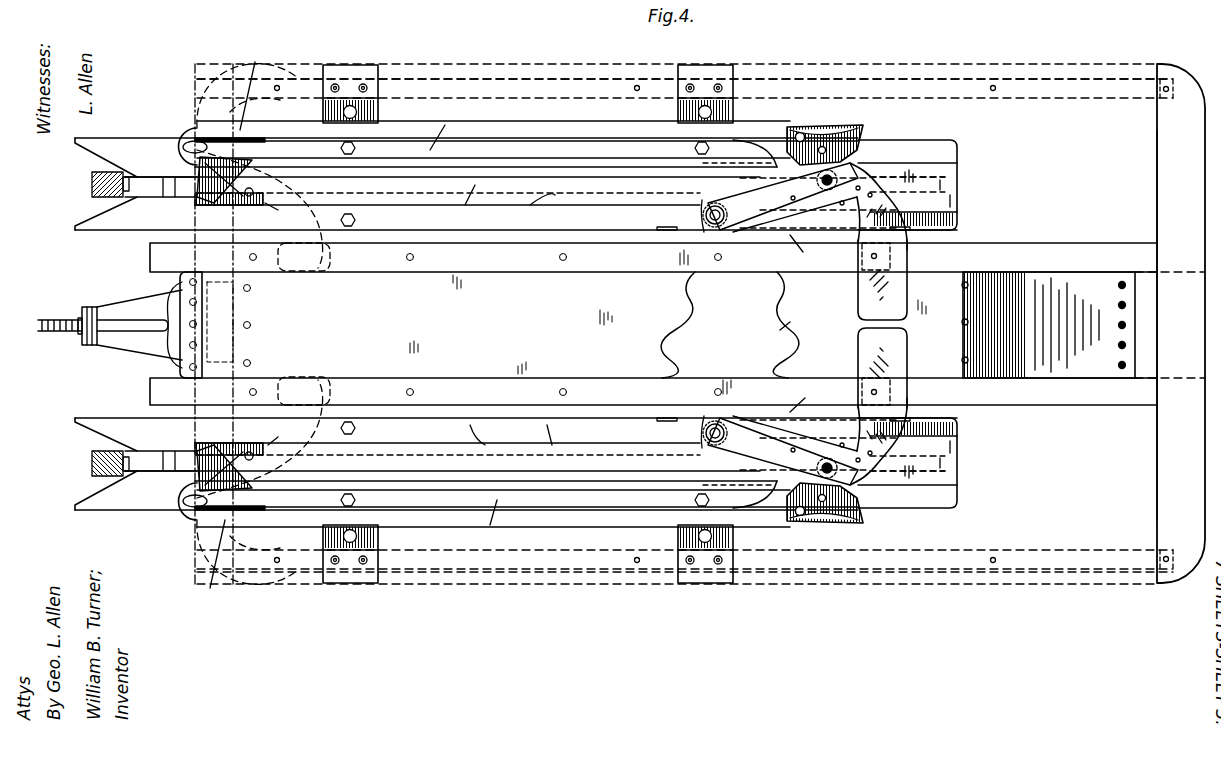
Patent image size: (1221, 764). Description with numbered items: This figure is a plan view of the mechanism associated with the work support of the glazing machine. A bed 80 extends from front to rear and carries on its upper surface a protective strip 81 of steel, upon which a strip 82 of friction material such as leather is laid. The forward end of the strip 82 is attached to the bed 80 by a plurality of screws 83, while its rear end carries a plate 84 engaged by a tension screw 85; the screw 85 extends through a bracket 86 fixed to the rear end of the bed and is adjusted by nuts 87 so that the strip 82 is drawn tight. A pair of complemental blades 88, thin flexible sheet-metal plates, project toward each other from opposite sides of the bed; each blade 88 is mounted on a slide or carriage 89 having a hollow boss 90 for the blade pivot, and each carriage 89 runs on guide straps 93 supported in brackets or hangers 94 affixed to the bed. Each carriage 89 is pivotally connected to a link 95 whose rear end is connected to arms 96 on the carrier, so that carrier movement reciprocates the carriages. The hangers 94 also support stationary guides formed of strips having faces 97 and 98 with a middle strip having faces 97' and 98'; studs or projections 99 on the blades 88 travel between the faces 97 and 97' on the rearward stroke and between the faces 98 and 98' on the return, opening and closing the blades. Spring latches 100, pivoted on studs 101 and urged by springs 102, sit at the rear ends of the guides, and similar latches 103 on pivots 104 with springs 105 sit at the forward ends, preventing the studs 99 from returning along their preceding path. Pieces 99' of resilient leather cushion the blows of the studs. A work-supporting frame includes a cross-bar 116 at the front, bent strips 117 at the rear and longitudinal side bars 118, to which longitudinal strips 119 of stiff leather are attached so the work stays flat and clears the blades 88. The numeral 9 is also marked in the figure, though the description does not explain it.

The plate 9 is at (493, 313).
The bed 80 is at (1110, 405).
The protective strip 81 is at (653, 324).
The strip of friction material 82 is at (770, 335).
The screws 83 is at (1128, 345).
The plate 84 is at (175, 300).
The tension screw 85 is at (133, 332).
The bracket 86 is at (112, 308).
The nuts 87 is at (80, 335).
The complemental blades 88 is at (870, 358).
The slide or carriage 89 is at (957, 185).
The hollow boss 90 is at (722, 225).
The guide straps 93 is at (957, 150).
The brackets or hangers 94 is at (352, 76).
The link 95 is at (180, 185).
The arms 96 is at (92, 184).
The face 97 is at (507, 320).
The face 97' is at (503, 316).
The face 98 is at (516, 343).
The face 98' is at (460, 325).
The studs or projections 99 is at (536, 322).
The pieces of resilient material 99' is at (507, 325).
The spring latches 100 is at (250, 165).
The studs 101 is at (286, 325).
The spring 102 is at (195, 200).
The latch 103 is at (848, 168).
The pivots 104 is at (800, 130).
The springs 105 is at (863, 126).
The cross-bar 116 is at (1157, 185).
The bent strips 117 is at (210, 105).
The longitudinal side bars 118 is at (938, 585).
The longitudinal strips 119 is at (443, 585).